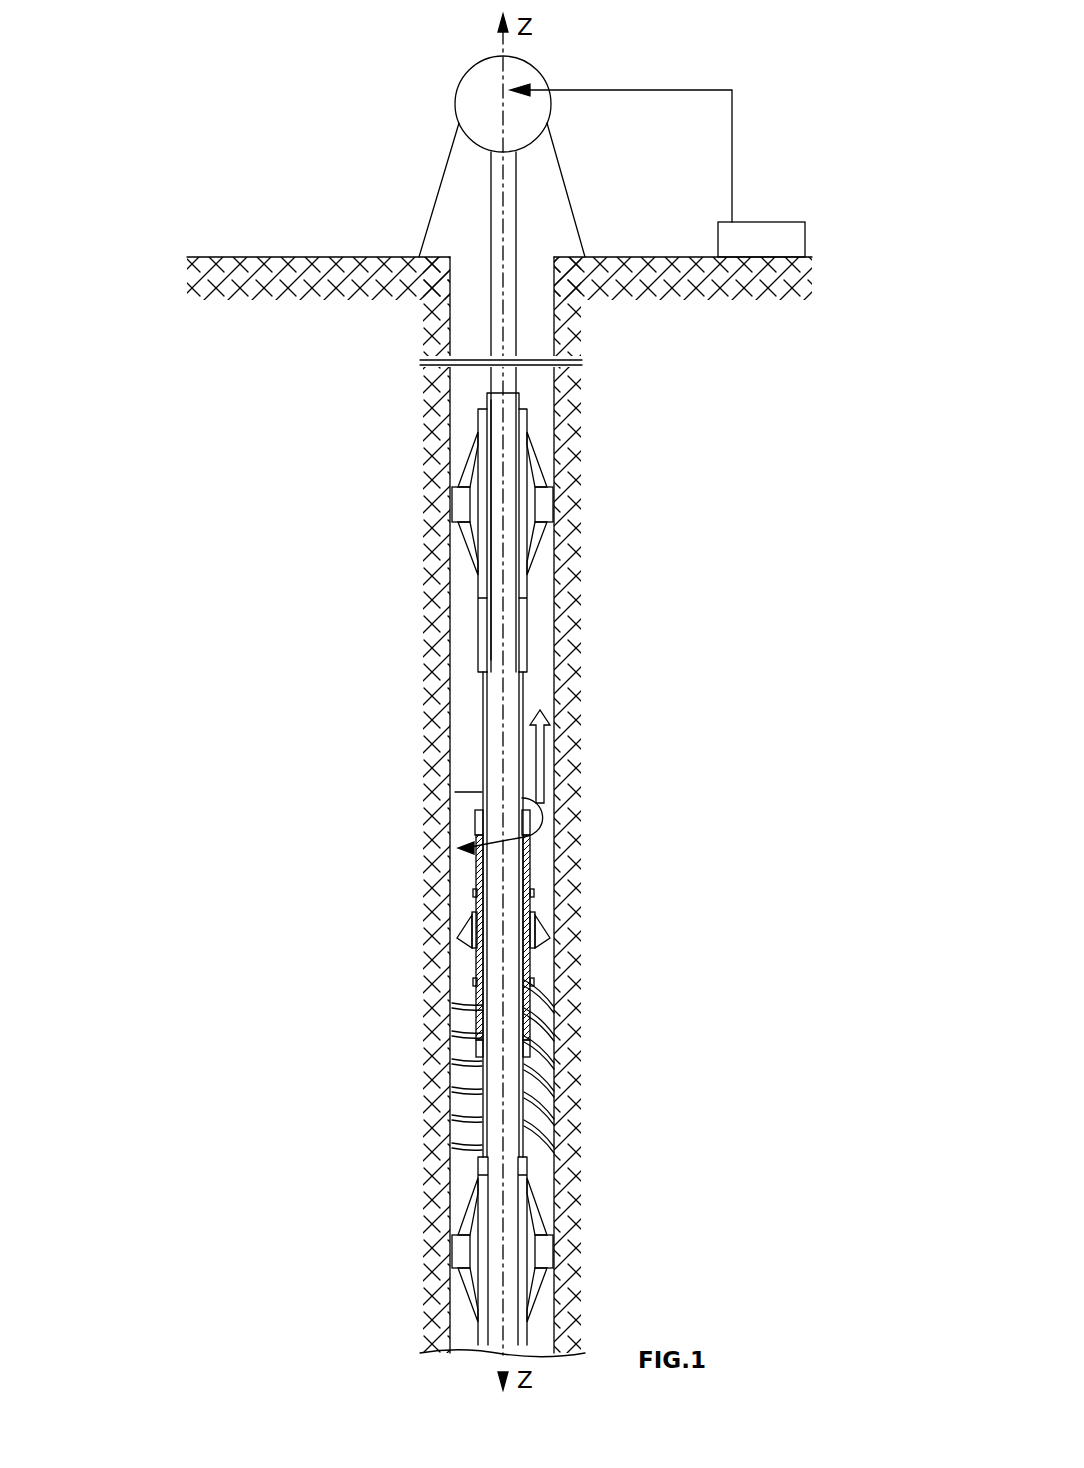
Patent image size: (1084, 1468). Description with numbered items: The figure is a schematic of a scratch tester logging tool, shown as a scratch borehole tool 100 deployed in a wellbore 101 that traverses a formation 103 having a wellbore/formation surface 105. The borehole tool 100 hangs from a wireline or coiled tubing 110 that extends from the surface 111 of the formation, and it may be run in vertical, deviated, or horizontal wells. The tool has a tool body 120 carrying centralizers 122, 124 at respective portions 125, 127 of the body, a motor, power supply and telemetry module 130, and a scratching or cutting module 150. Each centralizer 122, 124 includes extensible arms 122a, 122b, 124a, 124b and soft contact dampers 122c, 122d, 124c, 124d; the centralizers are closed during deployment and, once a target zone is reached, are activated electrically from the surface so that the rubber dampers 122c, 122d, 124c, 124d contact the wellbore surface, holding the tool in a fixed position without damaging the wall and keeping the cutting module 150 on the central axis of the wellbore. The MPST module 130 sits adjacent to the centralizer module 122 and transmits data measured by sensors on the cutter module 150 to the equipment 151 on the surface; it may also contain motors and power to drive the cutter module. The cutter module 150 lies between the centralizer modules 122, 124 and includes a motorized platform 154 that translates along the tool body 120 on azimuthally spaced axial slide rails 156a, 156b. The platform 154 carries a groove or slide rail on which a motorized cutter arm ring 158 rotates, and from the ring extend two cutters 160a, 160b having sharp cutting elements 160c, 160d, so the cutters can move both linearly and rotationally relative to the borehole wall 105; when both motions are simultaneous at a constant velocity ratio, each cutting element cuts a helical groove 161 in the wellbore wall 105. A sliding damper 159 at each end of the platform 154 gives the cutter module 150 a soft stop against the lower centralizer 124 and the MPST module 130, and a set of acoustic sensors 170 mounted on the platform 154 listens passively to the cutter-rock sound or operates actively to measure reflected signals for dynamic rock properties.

The scratch borehole tool 100 is at (532, 748).
The wellbore 101 is at (473, 400).
The formation 103 is at (572, 420).
The wellbore/formation surface 105 is at (553, 641).
The wireline or coiled tubing 110 is at (514, 378).
The surface of the formation 111 is at (648, 257).
The tool body 120 is at (525, 702).
The centralizer 122 is at (499, 506).
The extensible arm 122a is at (542, 548).
The extensible arm 122b is at (465, 462).
The soft contact damper 122c is at (550, 503).
The soft contact damper 122d is at (457, 503).
The centralizer 124 is at (496, 1249).
The extensible arm 124a is at (540, 1208).
The extensible arm 124b is at (465, 1300).
The soft contact damper 124c is at (548, 1250).
The soft contact damper 124d is at (457, 1260).
The portion of the body 125 is at (505, 572).
The portion of the body 127 is at (500, 1172).
The motor, power supply and telemetry module 130 is at (483, 633).
The scratching or cutting module 150 is at (529, 977).
The equipment on the surface 151 is at (760, 222).
The motorized platform 154 is at (531, 1030).
The axial slide rail 156a is at (523, 775).
The axial slide rail 156b is at (482, 722).
The motorized cutter arm ring 158 is at (476, 915).
The sliding damper 159 is at (482, 812).
The cutter 160a is at (536, 914).
The cutter 160b is at (460, 936).
The cutting element 160c is at (548, 932).
The cutting element 160d is at (458, 952).
The helical groove 161 is at (455, 1118).
The acoustic sensor 170 is at (534, 892).